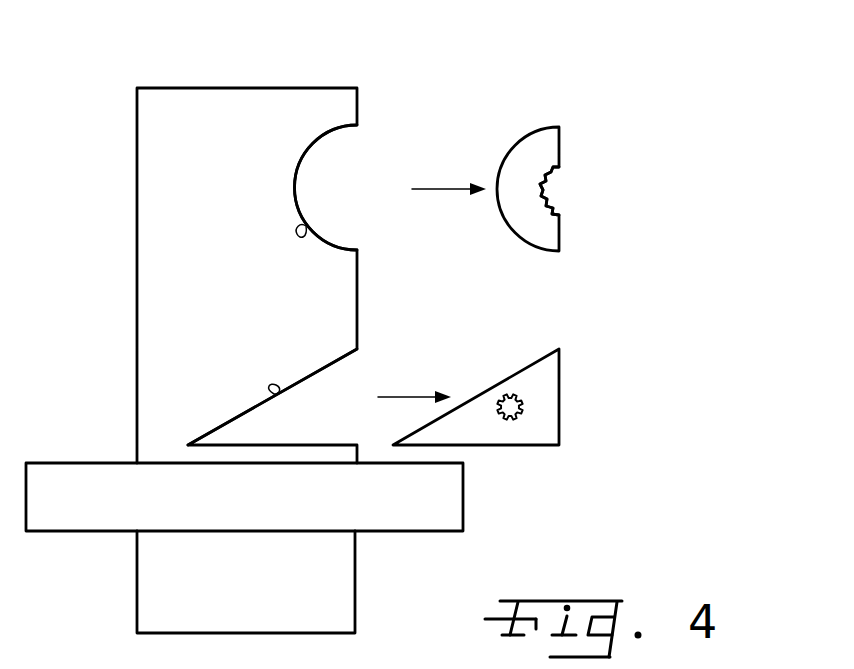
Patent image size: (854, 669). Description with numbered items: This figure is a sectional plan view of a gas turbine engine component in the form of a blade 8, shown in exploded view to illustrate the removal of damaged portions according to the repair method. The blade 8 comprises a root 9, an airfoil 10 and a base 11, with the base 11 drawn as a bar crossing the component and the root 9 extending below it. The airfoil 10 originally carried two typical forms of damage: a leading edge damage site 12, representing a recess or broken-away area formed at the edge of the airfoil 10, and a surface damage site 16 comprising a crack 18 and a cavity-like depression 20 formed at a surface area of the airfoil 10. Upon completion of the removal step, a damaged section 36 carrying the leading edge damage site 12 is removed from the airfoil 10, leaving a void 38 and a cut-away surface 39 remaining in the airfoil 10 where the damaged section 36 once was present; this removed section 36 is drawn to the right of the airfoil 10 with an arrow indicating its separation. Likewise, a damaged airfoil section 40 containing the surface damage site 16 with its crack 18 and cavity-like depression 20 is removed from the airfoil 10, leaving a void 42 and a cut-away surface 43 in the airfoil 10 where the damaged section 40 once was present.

The blade 8 is at (482, 540).
The root 9 is at (355, 585).
The airfoil 10 is at (337, 75).
The base 11 is at (463, 497).
The leading edge damage site 12 is at (557, 189).
The surface damage site 16 is at (533, 407).
The crack 18 is at (517, 436).
The cavity-like depression 20 is at (516, 395).
The damaged section 36 is at (570, 126).
The void 38 is at (345, 153).
The cut-away surface 39 is at (306, 232).
The damaged airfoil section 40 is at (565, 346).
The void 42 is at (343, 378).
The cut-away surface 43 is at (276, 385).